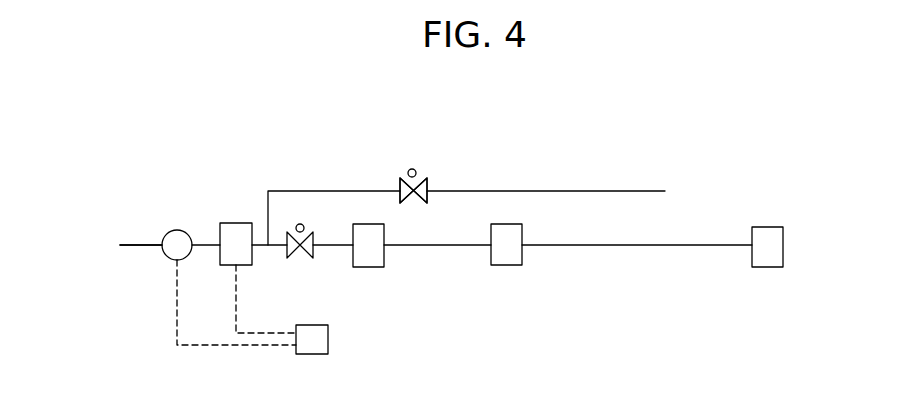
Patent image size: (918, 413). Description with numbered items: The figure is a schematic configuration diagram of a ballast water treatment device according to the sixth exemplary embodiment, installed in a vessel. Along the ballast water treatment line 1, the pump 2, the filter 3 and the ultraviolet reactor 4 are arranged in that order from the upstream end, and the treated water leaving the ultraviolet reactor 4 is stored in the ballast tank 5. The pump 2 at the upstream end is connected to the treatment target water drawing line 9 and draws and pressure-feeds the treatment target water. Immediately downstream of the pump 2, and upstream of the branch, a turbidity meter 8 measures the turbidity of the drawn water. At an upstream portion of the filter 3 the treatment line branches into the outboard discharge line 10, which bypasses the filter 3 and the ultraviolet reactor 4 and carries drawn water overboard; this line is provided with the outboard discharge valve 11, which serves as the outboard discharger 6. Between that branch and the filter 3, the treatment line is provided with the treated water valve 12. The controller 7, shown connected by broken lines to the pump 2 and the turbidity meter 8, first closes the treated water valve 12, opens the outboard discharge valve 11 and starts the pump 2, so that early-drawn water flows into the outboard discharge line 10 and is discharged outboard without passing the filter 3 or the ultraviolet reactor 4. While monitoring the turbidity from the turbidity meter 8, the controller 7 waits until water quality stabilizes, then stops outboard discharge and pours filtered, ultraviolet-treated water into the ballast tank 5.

The ballast water treatment line 1 is at (205, 244).
The pump 2 is at (177, 230).
The filter 3 is at (366, 268).
The ultraviolet reactor 4 is at (522, 262).
The ballast tank 5 is at (772, 268).
The outboard discharger 6 is at (442, 164).
The controller 7 is at (312, 323).
The turbidity meter 8 is at (236, 223).
The treatment target water drawing line 9 is at (140, 244).
The outboard discharge line 10 is at (499, 191).
The outboard discharge valve 11 is at (415, 177).
The treated water valve 12 is at (305, 228).